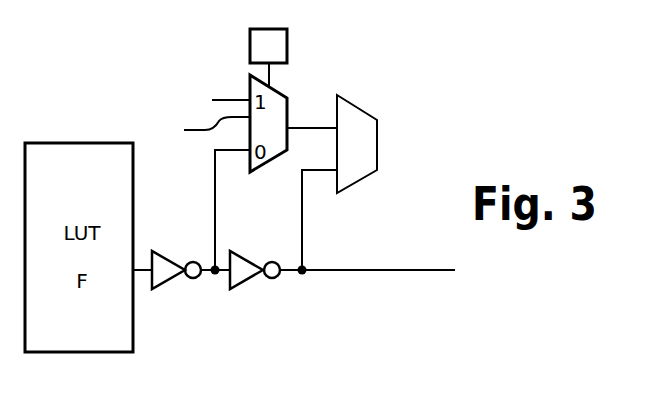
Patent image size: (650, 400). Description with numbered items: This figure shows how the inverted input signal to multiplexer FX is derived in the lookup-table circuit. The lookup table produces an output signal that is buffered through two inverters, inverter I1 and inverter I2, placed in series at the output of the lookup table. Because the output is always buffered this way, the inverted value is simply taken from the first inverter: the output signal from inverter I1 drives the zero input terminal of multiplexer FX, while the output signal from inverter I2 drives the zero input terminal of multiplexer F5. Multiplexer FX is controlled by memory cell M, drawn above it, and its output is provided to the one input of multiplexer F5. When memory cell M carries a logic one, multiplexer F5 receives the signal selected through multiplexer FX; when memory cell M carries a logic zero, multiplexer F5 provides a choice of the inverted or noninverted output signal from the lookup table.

The inverter I1 is at (168, 284).
The inverter I2 is at (247, 284).
The memory cell M is at (268, 46).
The multiplexer FX is at (201, 130).
The multiplexer F5 is at (357, 105).